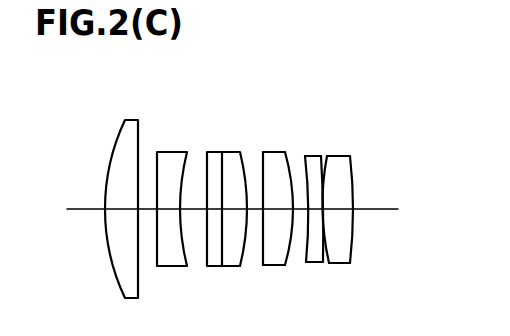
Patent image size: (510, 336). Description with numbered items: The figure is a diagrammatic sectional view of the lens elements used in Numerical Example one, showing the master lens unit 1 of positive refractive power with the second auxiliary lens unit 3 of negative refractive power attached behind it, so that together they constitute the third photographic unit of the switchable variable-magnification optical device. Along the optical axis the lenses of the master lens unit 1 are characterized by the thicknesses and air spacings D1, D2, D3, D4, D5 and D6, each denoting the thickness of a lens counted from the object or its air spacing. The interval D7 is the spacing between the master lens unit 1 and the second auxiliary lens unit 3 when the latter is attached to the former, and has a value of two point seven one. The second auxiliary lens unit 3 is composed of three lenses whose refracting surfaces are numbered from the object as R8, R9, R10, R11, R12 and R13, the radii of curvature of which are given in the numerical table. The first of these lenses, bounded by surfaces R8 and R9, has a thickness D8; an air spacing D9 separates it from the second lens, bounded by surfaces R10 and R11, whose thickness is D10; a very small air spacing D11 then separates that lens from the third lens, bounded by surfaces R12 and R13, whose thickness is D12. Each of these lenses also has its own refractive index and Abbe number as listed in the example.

The master lens unit 1 is at (227, 93).
The second auxiliary lens unit 3 is at (393, 93).
The lens thickness D1 is at (224, 8).
The lens thickness D2 is at (244, 8).
The lens thickness D3 is at (264, 8).
The lens thickness D4 is at (285, 8).
The lens thickness D5 is at (305, 8).
The lens thickness D6 is at (325, 8).
The lens surface R8 is at (263, 157).
The lens surface R9 is at (285, 155).
The lens surface R10 is at (305, 165).
The lens surface R11 is at (321, 160).
The lens surface R12 is at (328, 160).
The lens surface R13 is at (351, 162).
The interval D7 is at (256, 213).
The lens thickness D8 is at (280, 213).
The air spacing D9 is at (300, 213).
The lens thickness D10 is at (318, 213).
The air spacing D11 is at (326, 213).
The lens thickness D12 is at (328, 215).